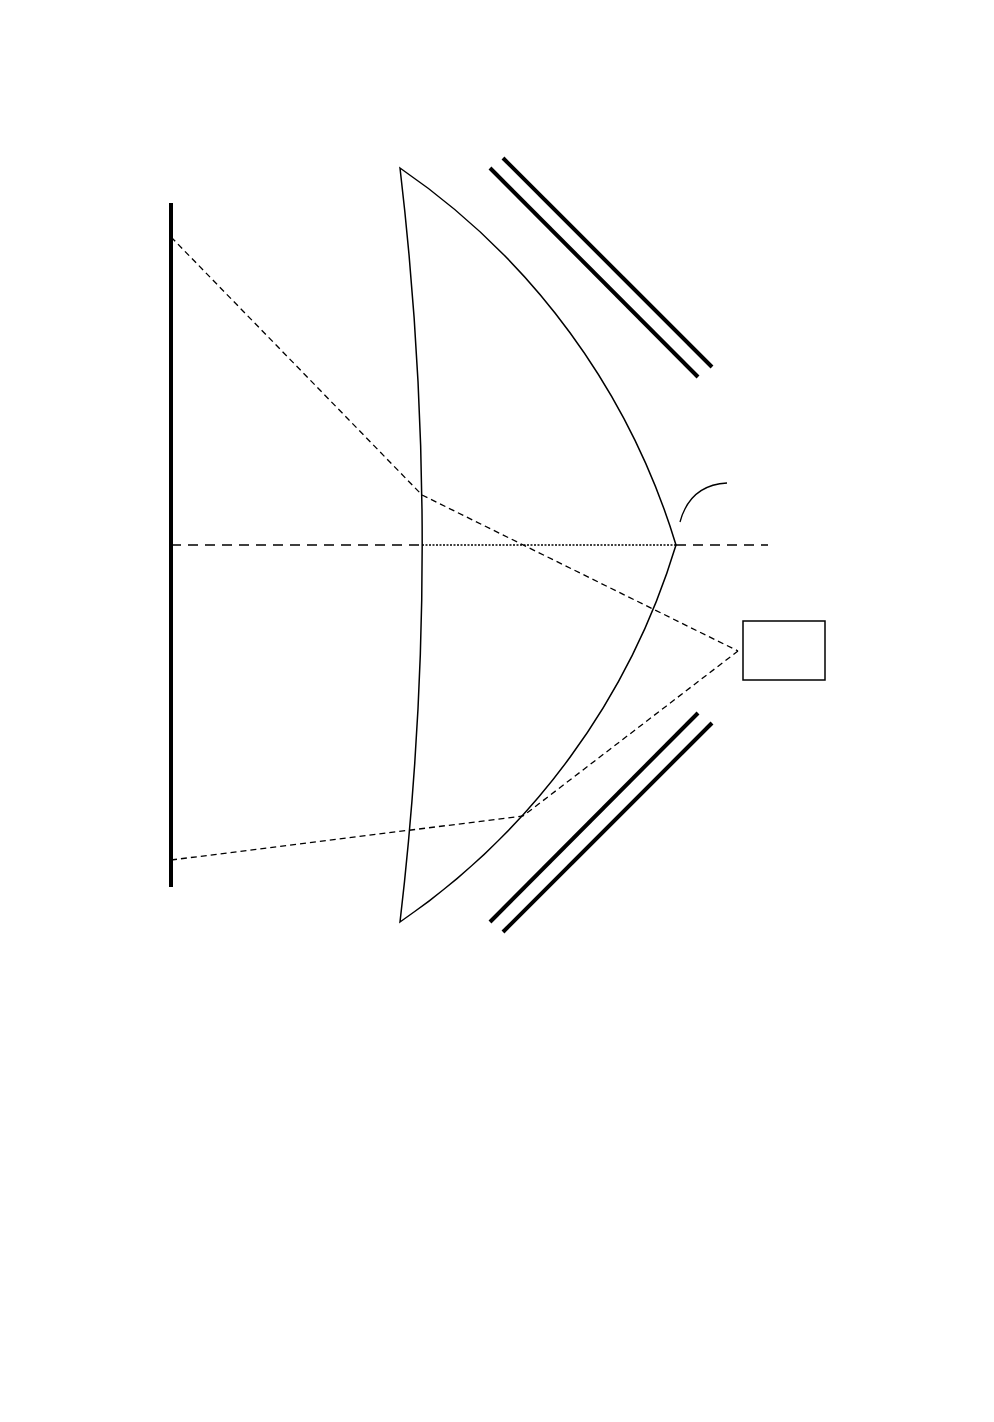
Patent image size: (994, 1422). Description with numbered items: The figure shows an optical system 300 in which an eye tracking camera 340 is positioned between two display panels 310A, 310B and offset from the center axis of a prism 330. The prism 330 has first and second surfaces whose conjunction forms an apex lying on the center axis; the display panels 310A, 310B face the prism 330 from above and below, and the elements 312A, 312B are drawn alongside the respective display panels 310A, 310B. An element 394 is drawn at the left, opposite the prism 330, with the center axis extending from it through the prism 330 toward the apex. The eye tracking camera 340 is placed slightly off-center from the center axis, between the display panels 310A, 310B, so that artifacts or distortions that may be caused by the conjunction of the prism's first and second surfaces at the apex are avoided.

The optical system 300 is at (194, 62).
The image plane / display 394 is at (165, 228).
The prism 330 is at (538, 545).
The display panel 310A is at (590, 245).
The first reflective surface 312A is at (490, 168).
The display panel 310B is at (578, 858).
The second reflective surface 312B is at (493, 920).
The eye tracking camera 340 is at (784, 650).